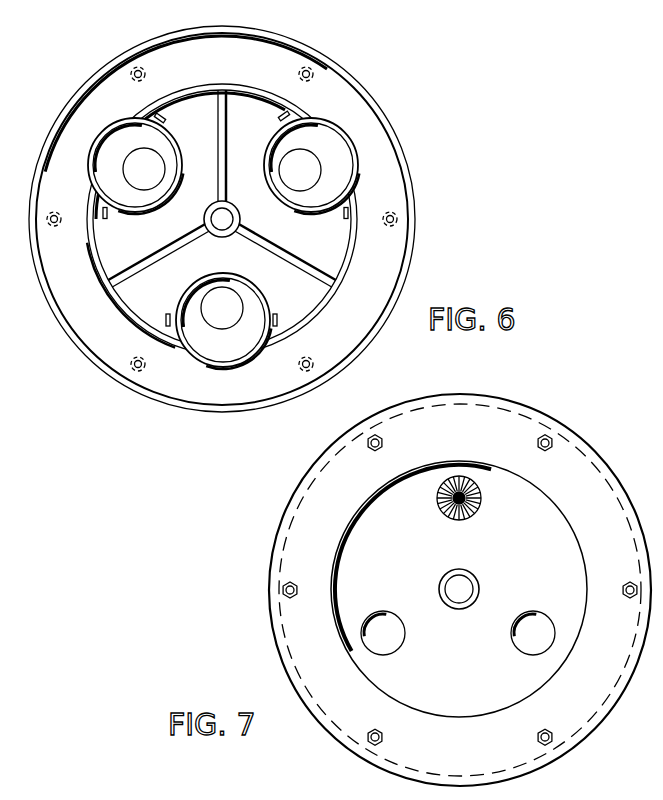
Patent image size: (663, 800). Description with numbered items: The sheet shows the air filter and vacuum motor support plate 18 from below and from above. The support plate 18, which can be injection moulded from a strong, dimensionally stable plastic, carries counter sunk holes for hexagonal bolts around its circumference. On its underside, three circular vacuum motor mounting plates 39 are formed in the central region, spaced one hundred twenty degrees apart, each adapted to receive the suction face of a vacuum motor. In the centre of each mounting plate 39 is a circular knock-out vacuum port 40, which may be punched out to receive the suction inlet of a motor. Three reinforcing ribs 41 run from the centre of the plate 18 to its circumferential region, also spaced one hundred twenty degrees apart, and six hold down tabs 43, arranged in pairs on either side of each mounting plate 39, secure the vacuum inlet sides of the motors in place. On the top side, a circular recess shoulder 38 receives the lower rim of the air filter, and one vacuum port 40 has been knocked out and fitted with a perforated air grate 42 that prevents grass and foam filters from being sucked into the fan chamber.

In FIG. 6, the filter and motor support plate 18 is at (372, 90).
In FIG. 7, the filter and motor support plate 18 is at (266, 579).
In FIG. 7, the circular recess shoulder 38 is at (342, 618).
In FIG. 6, the vacuum motor mounting plates 39 is at (106, 123).
In FIG. 6, the knock-out vacuum ports 40 is at (153, 178).
In FIG. 7, the knock-out vacuum ports 40 is at (528, 645).
In FIG. 6, the reinforcing ribs 41 is at (147, 272).
In FIG. 7, the perforated air grate 42 is at (465, 495).
In FIG. 6, the hold down tabs 43 is at (275, 104).